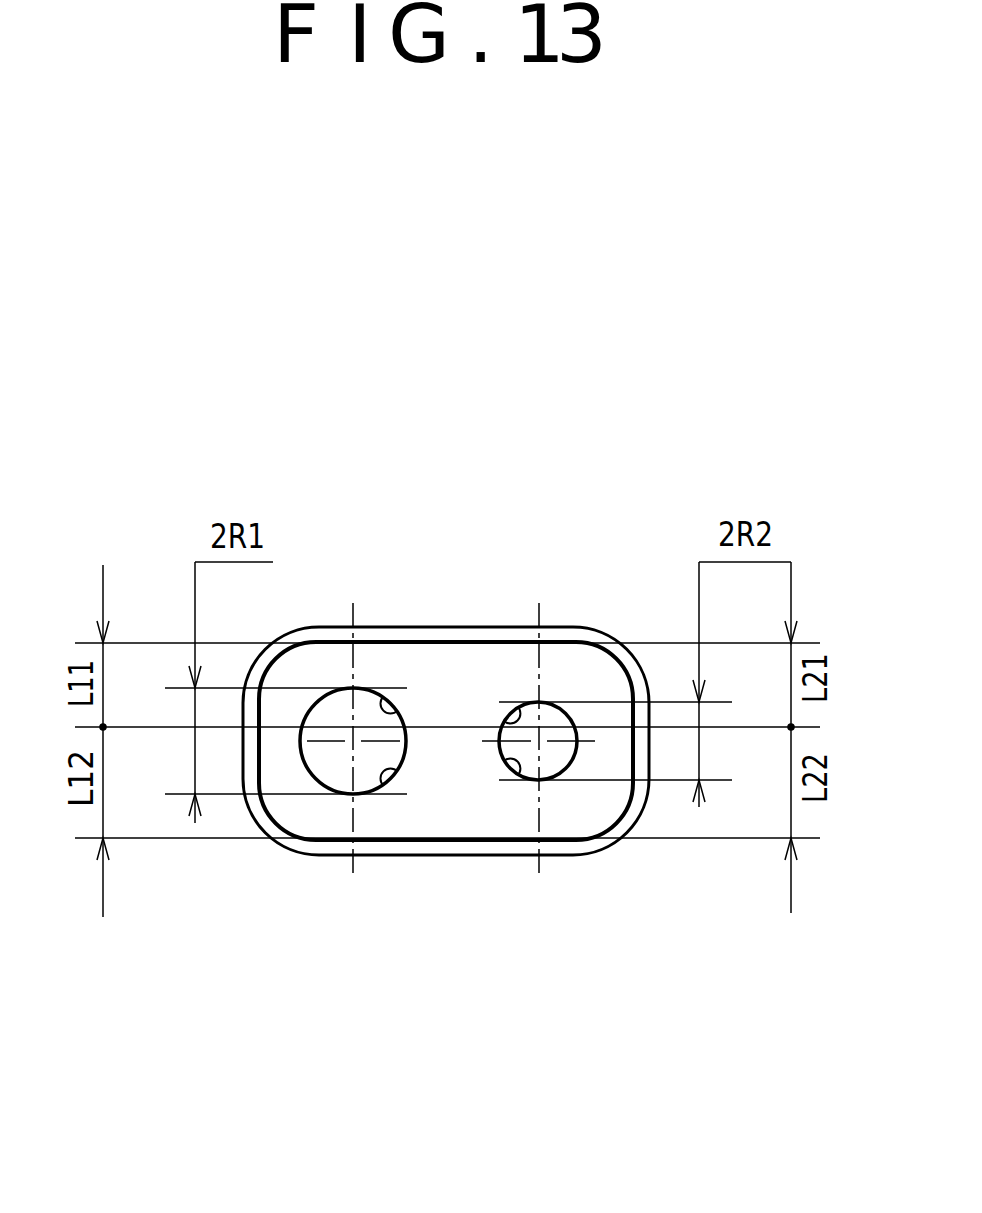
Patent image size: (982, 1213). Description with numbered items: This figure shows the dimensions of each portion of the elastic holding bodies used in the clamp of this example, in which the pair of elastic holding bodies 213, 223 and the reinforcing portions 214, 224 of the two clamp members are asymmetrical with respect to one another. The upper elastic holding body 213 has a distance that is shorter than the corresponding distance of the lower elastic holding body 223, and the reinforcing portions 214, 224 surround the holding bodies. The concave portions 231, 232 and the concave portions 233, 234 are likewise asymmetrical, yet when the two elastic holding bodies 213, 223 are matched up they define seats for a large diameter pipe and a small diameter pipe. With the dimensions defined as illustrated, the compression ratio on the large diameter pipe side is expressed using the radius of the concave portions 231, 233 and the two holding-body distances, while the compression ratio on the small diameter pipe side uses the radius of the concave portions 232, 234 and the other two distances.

The elastic holding body 213 is at (460, 663).
The reinforcing portion 214 is at (332, 633).
The elastic holding body 223 is at (460, 822).
The reinforcing portion 224 is at (327, 846).
The concave portion 231 is at (397, 706).
The concave portion 232 is at (505, 718).
The concave portion 233 is at (397, 776).
The concave portion 234 is at (505, 765).